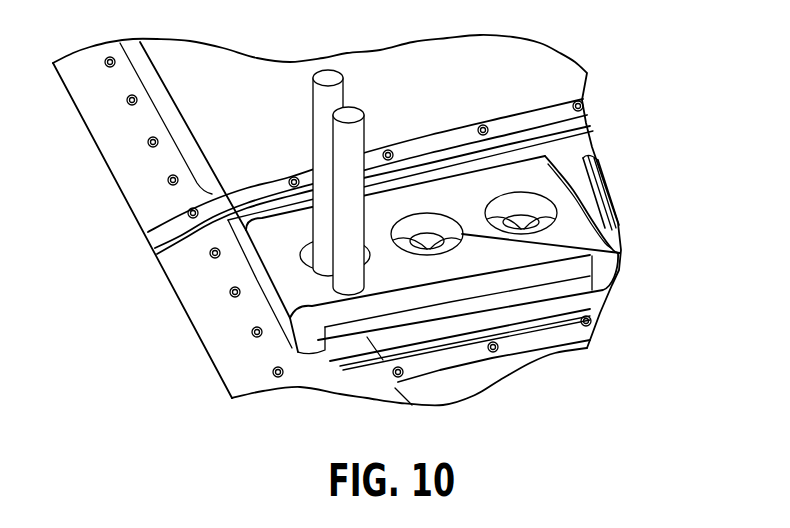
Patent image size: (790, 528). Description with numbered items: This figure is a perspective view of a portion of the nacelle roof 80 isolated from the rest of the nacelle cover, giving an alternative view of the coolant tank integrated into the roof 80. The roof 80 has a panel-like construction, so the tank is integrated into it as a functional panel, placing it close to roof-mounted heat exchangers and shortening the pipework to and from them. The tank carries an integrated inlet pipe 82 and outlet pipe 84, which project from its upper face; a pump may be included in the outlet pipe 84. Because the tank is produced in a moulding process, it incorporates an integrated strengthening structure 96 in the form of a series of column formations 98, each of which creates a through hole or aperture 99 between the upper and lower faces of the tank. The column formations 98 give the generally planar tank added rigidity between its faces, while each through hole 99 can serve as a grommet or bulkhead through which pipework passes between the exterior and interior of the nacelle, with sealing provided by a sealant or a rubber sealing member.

The roof 80 is at (93, 138).
The inlet pipe 82 is at (318, 96).
The outlet pipe 84 is at (352, 128).
The strengthening structure 96 is at (250, 217).
The column formations 98 is at (539, 188).
The through hole 99 is at (578, 254).